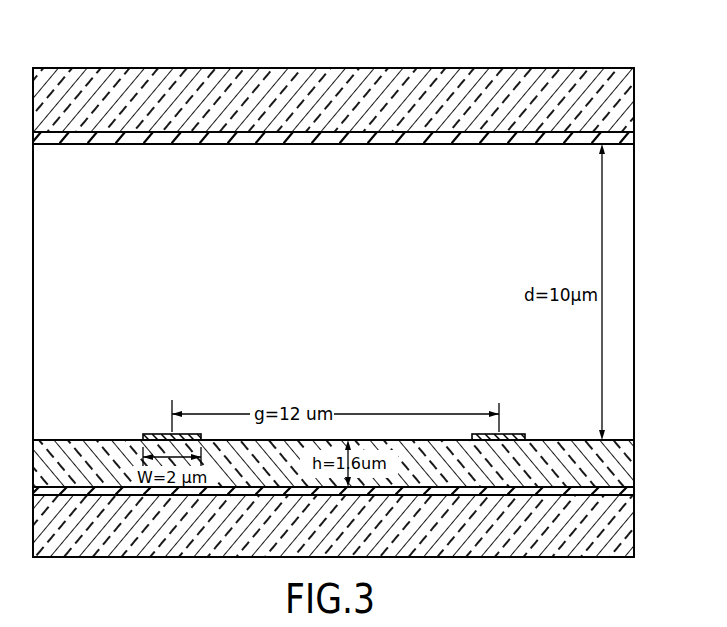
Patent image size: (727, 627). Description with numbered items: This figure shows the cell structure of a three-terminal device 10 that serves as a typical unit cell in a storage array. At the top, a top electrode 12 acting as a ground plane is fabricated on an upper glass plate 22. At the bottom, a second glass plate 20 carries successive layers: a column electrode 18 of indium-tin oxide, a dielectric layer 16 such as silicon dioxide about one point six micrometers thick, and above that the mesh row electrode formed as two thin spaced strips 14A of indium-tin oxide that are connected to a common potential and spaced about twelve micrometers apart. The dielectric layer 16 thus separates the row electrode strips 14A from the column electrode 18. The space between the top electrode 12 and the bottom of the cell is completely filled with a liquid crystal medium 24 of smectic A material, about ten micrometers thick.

The three-terminal device 10 is at (646, 229).
The top electrode 12 is at (634, 139).
The strips 14A is at (150, 434).
The dielectric layer 16 is at (626, 468).
The column electrode 18 is at (634, 490).
The glass plate 20 is at (607, 558).
The glass plate 22 is at (523, 63).
The liquid crystal medium 24 is at (635, 312).